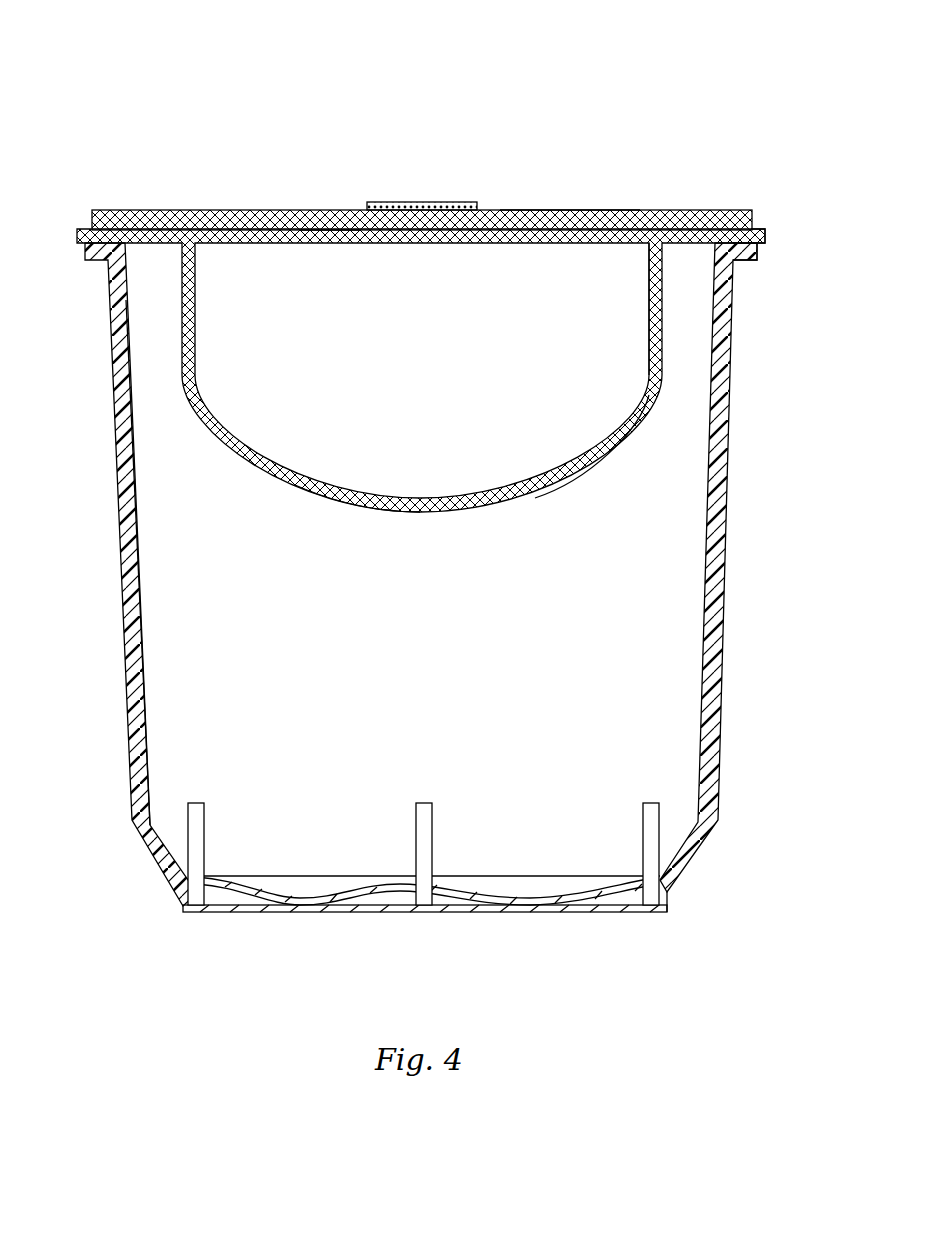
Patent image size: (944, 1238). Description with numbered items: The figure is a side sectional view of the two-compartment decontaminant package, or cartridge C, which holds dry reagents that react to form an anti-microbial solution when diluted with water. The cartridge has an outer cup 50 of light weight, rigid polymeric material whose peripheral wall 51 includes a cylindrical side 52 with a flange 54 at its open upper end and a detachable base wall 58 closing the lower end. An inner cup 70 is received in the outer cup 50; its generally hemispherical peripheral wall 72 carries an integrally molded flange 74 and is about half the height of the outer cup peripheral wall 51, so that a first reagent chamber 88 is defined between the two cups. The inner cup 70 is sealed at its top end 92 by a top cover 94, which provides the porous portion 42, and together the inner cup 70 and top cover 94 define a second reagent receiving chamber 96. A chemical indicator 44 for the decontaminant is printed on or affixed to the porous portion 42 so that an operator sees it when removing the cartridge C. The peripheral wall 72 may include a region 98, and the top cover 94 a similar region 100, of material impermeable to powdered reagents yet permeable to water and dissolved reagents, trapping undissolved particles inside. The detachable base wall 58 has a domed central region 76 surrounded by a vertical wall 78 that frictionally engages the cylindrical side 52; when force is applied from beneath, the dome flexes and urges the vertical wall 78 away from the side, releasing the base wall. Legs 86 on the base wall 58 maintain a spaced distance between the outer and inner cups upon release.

The cartridge C is at (412, 88).
The porous portion 42 is at (270, 198).
The chemical indicator 44 is at (398, 203).
The top cover 94 is at (560, 200).
The integrally molded flange 74 is at (762, 218).
The region 100 is at (327, 232).
The peripheral wall 72 is at (196, 326).
The second reagent receiving chamber 96 is at (422, 384).
The top end 92 is at (627, 243).
The region 98 is at (600, 432).
The inner cup 70 is at (320, 505).
The outer cup 50 is at (440, 609).
The peripheral wall 51 is at (118, 636).
The cylindrical side 52 is at (730, 446).
The flange 54 is at (755, 265).
The first reagent chamber 88 is at (268, 655).
The detachable base wall 58 is at (603, 910).
The vertical wall 78 is at (673, 880).
The domed central region 76 is at (360, 878).
The legs 86 is at (432, 810).